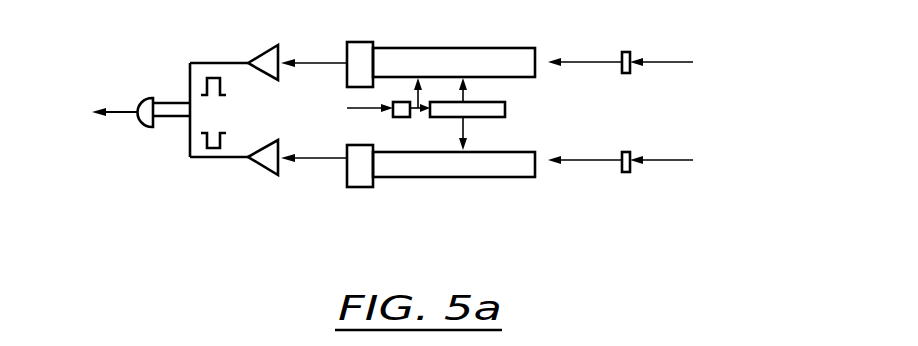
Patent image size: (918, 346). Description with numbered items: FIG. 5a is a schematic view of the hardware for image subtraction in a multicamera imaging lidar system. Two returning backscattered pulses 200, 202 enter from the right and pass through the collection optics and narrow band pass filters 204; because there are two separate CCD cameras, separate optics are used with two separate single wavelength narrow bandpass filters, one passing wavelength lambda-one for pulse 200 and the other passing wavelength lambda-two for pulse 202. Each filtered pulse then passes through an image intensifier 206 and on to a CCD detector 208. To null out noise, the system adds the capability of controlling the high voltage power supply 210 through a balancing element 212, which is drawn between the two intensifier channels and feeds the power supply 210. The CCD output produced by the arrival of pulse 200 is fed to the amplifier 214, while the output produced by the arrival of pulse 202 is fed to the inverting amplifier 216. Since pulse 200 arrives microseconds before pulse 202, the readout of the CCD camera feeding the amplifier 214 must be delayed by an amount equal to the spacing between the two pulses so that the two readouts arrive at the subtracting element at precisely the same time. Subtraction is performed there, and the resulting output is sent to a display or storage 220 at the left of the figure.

The returning backscattered pulse 200 is at (643, 65).
The returning backscattered pulse 202 is at (643, 165).
The narrow band pass filter 204 is at (628, 52).
The image intensifier 206 is at (432, 48).
The CCD detector 208 is at (360, 42).
The high voltage power supply 210 is at (500, 98).
The balancing element 212 is at (398, 117).
The amplifier 214 is at (262, 50).
The inverting amplifier 216 is at (266, 167).
The display or storage 220 is at (93, 112).